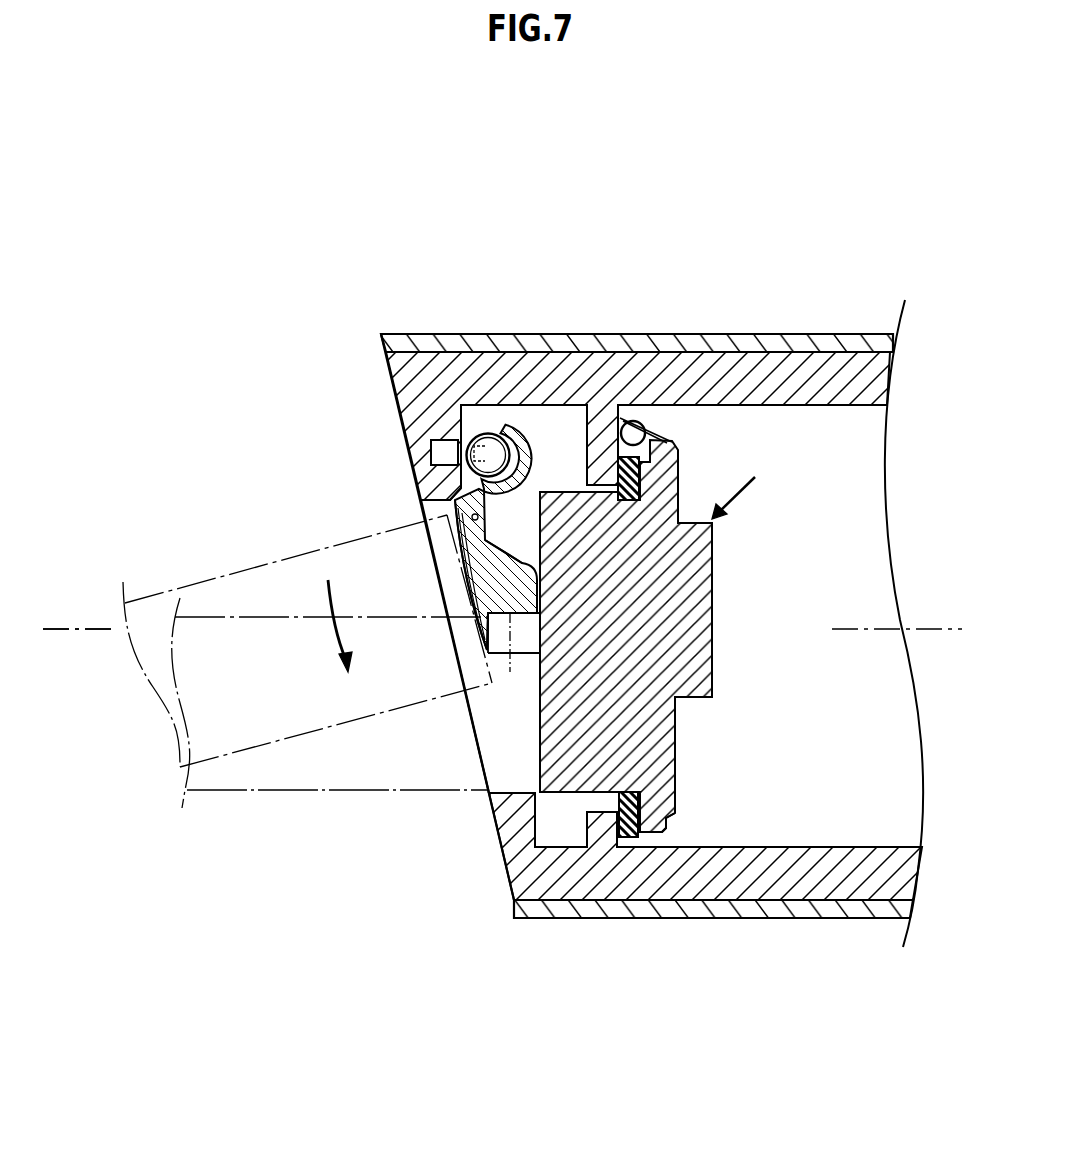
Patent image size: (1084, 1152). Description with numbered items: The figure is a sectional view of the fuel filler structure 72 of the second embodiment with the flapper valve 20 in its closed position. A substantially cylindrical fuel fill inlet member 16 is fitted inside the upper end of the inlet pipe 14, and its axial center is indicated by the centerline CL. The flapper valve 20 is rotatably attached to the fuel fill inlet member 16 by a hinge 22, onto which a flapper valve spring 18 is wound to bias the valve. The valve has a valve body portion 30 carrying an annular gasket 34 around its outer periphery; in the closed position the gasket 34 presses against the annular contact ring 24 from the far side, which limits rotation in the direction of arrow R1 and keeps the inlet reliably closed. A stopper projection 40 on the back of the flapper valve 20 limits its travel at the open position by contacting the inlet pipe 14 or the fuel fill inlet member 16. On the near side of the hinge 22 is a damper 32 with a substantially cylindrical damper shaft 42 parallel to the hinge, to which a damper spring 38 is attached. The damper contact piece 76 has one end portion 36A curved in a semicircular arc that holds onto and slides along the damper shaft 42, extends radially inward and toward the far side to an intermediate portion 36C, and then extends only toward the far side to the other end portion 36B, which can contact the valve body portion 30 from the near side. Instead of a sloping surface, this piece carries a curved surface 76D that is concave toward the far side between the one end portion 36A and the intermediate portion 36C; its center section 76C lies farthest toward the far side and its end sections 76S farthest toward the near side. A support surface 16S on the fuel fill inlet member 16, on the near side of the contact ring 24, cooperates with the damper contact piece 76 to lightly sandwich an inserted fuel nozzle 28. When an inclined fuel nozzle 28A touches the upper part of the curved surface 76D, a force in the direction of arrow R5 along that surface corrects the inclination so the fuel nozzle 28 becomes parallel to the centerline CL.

The fuel filler structure 72 is at (647, 208).
The damper shaft 42 is at (492, 442).
The damper 32 is at (531, 424).
The contact ring 24 is at (592, 436).
The hinge 22 is at (635, 428).
The flapper valve spring 18 is at (662, 350).
The fuel fill inlet member 16 is at (388, 382).
The damper spring 38 is at (466, 420).
The one end portion 36A is at (458, 490).
The fuel nozzle 28A is at (197, 581).
The fuel nozzle 28 is at (350, 795).
The arrow R5 is at (326, 592).
The damper contact piece 76 is at (478, 518).
The center section 76C is at (466, 575).
The end sections 76S is at (470, 598).
The curved surface 76D is at (474, 613).
The arrow R1 is at (753, 494).
The stopper projection 40 is at (716, 524).
The intermediate portion 36C is at (497, 598).
The other end portion 36B is at (482, 615).
The centerline CL is at (924, 618).
The flapper valve 20 is at (676, 728).
The valve body portion 30 is at (665, 802).
The support surface 16S is at (520, 788).
The gasket 34 is at (633, 840).
The inlet pipe 14 is at (872, 912).